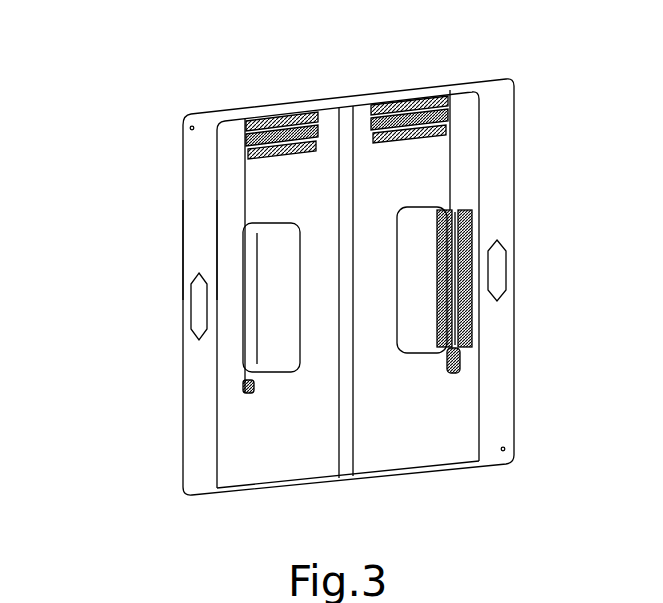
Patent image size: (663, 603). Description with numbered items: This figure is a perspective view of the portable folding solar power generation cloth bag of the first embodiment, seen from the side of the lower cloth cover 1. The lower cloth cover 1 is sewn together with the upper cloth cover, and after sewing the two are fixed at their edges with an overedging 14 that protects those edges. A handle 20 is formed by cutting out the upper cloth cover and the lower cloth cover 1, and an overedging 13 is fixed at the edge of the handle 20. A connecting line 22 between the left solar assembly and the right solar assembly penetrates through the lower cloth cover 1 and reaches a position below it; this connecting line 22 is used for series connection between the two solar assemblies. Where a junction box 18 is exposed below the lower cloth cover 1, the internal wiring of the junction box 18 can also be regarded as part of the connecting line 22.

The lower cloth cover 1 is at (253, 450).
The overedging 13 is at (503, 268).
The overedging 14 is at (182, 252).
The junction box 18 is at (268, 137).
The handle 20 is at (191, 318).
The connecting line 22 is at (333, 120).